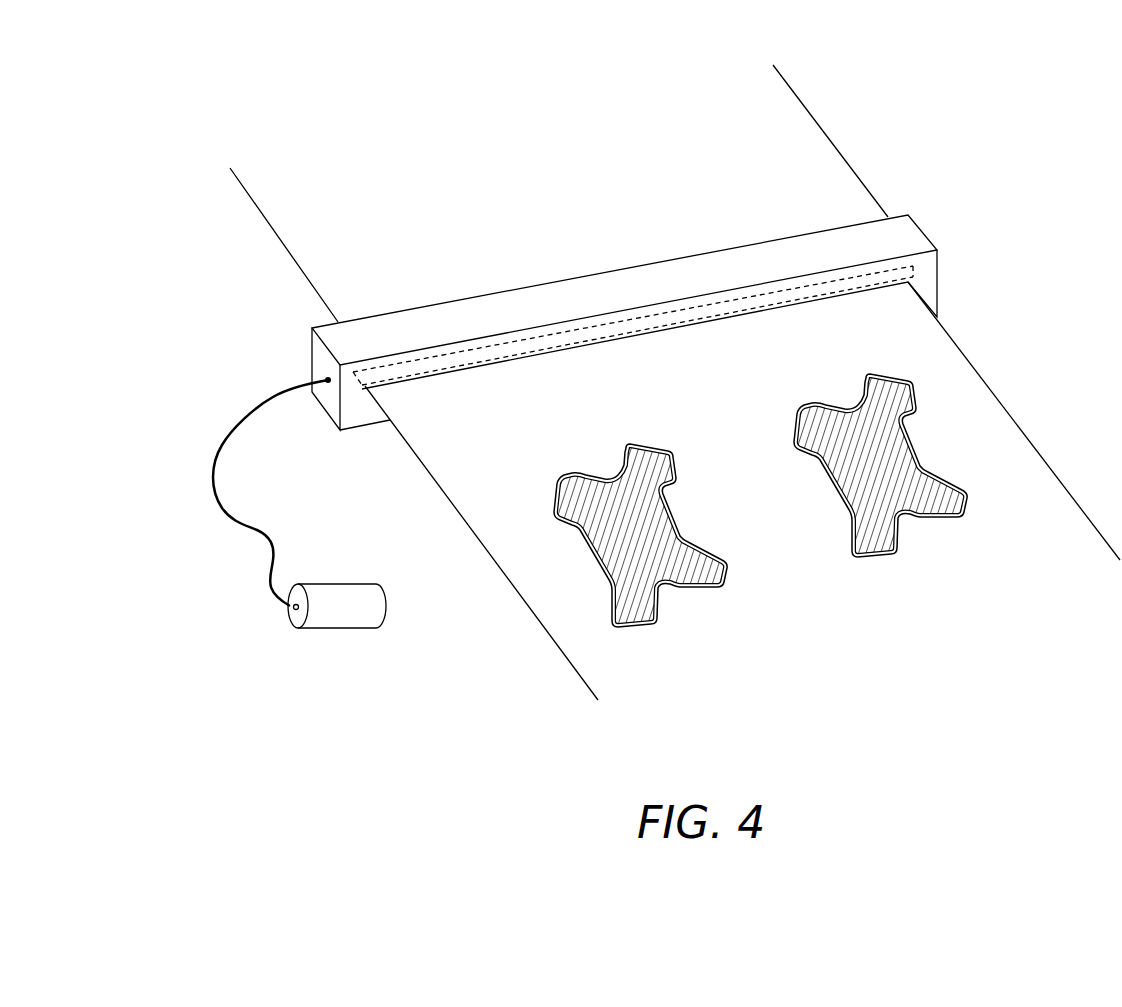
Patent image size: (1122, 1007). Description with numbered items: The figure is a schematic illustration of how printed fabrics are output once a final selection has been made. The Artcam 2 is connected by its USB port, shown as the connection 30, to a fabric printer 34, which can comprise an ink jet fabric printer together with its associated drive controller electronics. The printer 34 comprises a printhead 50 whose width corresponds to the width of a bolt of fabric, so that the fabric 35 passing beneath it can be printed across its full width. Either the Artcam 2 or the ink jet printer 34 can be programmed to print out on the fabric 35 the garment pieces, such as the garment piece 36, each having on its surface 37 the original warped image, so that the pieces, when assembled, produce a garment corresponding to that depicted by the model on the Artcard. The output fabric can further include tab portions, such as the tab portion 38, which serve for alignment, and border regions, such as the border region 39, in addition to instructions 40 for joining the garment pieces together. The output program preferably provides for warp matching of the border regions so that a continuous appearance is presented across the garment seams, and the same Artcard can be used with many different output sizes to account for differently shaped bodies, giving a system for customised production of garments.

The Artcam 2 is at (352, 573).
The USB port connection 30 is at (233, 437).
The fabric printer 34 is at (922, 233).
The fabric 35 is at (835, 148).
The garment piece 36 is at (935, 363).
The surface 37 is at (925, 463).
The tab portion 38 is at (868, 553).
The border region 39 is at (848, 543).
The instructions 40 is at (682, 494).
The printhead 50 is at (608, 306).